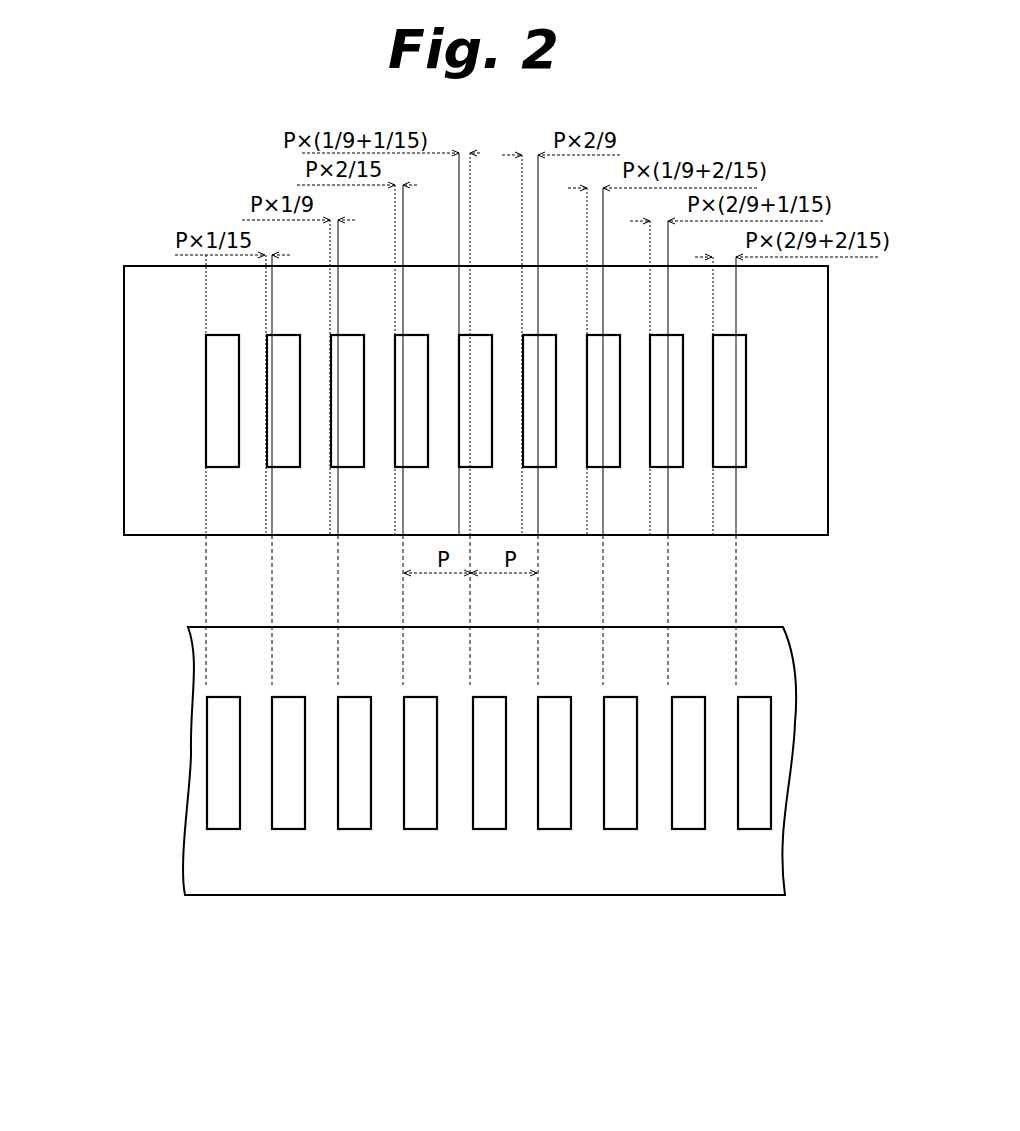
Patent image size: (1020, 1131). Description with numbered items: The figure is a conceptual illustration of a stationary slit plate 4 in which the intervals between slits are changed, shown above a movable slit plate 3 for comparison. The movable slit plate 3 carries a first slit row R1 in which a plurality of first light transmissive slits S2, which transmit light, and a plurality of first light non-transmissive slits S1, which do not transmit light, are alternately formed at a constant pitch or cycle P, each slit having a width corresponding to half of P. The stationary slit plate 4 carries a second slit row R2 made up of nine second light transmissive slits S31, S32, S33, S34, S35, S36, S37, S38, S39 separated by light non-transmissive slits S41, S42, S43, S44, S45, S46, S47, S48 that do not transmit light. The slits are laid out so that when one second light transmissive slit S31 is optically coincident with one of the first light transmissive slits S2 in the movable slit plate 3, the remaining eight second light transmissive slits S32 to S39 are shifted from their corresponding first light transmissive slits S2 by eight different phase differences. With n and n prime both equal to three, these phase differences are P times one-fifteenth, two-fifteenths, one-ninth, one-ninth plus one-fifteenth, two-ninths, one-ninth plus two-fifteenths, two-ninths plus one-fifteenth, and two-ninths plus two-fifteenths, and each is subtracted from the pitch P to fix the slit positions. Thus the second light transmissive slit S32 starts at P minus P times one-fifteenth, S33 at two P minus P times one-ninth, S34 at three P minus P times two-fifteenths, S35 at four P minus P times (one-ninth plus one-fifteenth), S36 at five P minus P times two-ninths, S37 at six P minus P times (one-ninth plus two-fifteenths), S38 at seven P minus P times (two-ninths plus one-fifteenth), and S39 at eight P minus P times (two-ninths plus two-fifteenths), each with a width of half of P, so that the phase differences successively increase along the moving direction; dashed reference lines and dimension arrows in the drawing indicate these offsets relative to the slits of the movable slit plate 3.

The movable slit plate 3 is at (787, 654).
The stationary slit plate 4 is at (846, 528).
The first slit row R1 is at (789, 752).
The second slit row R2 is at (481, 418).
The first light non-transmissive slits S1 is at (455, 705).
The first light transmissive slits S2 is at (215, 828).
The second light transmissive slit S31 is at (215, 453).
The second light transmissive slit S32 is at (274, 427).
The second light transmissive slit S33 is at (330, 400).
The second light transmissive slit S34 is at (399, 373).
The second light transmissive slit S35 is at (465, 355).
The second light transmissive slit S36 is at (553, 419).
The second light transmissive slit S37 is at (619, 393).
The second light transmissive slit S38 is at (678, 367).
The second light transmissive slit S39 is at (738, 342).
The light non-transmissive slit S41 is at (255, 440).
The light non-transmissive slit S42 is at (317, 433).
The light non-transmissive slit S43 is at (378, 450).
The light non-transmissive slit S44 is at (443, 345).
The light non-transmissive slit S45 is at (506, 360).
The light non-transmissive slit S46 is at (577, 442).
The light non-transmissive slit S47 is at (638, 435).
The light non-transmissive slit S48 is at (696, 448).